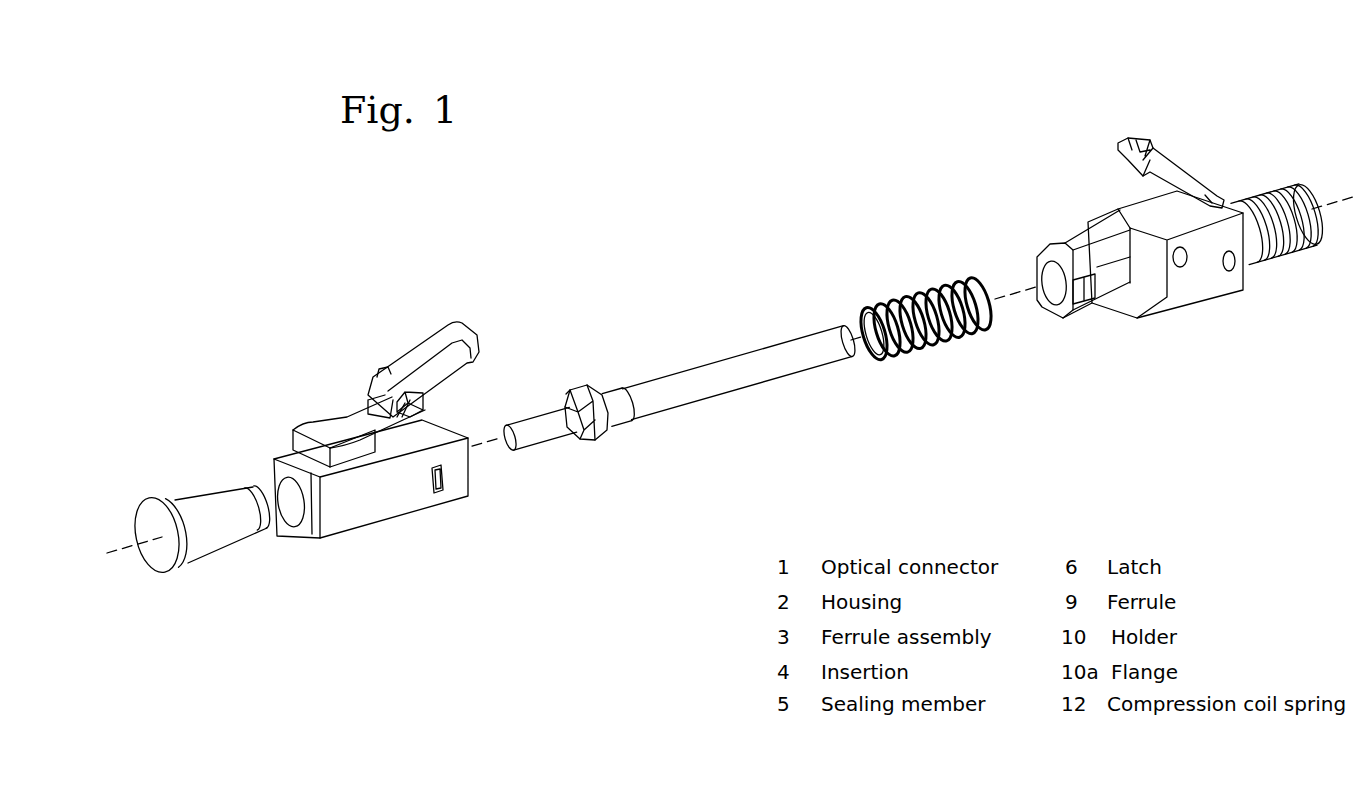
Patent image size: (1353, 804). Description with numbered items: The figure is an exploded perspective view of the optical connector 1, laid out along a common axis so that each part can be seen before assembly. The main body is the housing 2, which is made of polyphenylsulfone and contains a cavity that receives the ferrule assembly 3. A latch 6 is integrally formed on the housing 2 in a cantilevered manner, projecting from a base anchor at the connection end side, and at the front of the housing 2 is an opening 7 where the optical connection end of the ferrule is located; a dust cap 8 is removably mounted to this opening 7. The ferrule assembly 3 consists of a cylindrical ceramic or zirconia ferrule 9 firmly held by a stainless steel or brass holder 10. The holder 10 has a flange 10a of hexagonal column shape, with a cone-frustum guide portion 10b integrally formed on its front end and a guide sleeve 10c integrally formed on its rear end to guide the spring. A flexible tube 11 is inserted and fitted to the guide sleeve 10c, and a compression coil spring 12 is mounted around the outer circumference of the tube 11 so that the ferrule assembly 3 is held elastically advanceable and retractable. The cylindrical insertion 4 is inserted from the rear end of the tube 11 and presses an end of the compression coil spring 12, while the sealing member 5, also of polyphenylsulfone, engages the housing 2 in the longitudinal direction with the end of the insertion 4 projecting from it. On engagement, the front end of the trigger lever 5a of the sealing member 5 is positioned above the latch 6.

The optical connector 1 is at (664, 266).
The housing 2 is at (357, 533).
The ferrule assembly 3 is at (683, 357).
The insertion 4 is at (1287, 246).
The sealing member 5 is at (1193, 283).
The trigger lever 5a is at (1165, 165).
The latch 6 is at (425, 367).
The opening 7 is at (289, 526).
The dust cap 8 is at (197, 508).
The ferrule 9 is at (538, 438).
The holder 10 is at (582, 390).
The flange 10a is at (627, 421).
The guide portion 10b is at (566, 394).
The guide sleeve 10c is at (628, 399).
The flexible tube 11 is at (768, 369).
The compression coil spring 12 is at (933, 333).